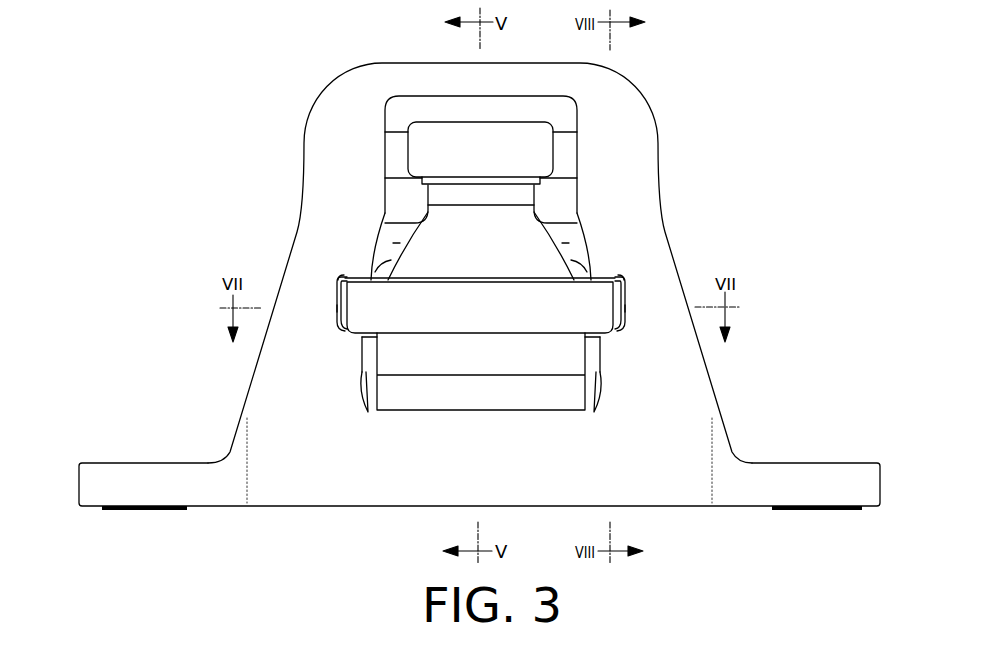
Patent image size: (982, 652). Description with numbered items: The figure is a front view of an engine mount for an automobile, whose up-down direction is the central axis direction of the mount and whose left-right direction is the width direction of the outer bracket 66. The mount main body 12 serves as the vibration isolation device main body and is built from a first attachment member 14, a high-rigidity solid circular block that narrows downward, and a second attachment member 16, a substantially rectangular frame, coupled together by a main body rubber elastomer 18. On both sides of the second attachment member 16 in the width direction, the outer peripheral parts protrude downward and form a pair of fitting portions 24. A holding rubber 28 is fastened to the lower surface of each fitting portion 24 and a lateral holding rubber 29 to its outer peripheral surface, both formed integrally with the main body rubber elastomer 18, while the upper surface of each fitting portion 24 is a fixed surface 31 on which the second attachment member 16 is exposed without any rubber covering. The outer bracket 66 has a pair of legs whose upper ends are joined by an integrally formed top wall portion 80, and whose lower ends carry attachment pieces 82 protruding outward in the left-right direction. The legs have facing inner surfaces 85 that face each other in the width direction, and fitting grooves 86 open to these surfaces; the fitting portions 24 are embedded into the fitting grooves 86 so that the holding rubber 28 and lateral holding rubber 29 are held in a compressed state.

The mount main body 12 is at (605, 375).
The first attachment member 14 is at (508, 148).
The second attachment member 16 is at (550, 307).
The main body rubber elastomer 18 is at (520, 239).
The fitting portion 24 is at (360, 307).
The holding rubber 28 is at (358, 338).
The lateral holding rubber 29 is at (342, 312).
The fixed surface 31 is at (344, 278).
The outer bracket 66 is at (272, 281).
The top wall portion 80 is at (495, 68).
The attachment piece 82 is at (803, 480).
The facing inner surface 85 is at (368, 413).
The fitting groove 86 is at (338, 322).